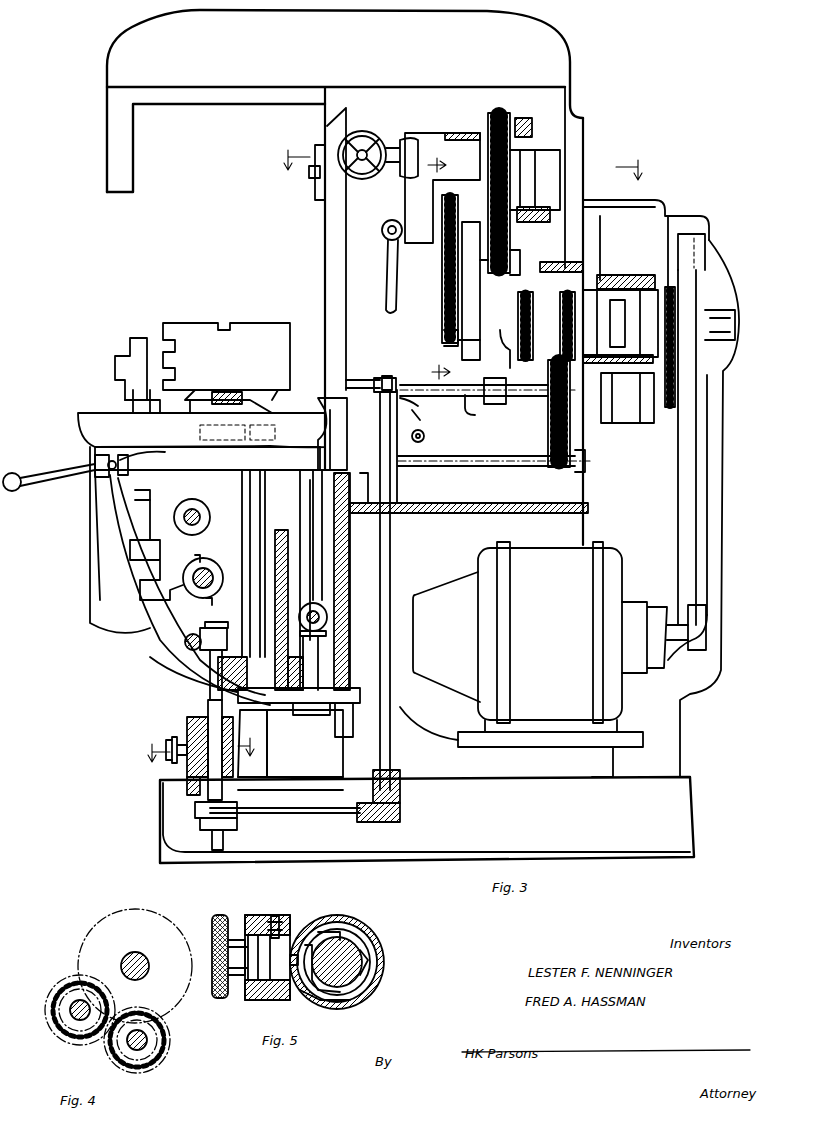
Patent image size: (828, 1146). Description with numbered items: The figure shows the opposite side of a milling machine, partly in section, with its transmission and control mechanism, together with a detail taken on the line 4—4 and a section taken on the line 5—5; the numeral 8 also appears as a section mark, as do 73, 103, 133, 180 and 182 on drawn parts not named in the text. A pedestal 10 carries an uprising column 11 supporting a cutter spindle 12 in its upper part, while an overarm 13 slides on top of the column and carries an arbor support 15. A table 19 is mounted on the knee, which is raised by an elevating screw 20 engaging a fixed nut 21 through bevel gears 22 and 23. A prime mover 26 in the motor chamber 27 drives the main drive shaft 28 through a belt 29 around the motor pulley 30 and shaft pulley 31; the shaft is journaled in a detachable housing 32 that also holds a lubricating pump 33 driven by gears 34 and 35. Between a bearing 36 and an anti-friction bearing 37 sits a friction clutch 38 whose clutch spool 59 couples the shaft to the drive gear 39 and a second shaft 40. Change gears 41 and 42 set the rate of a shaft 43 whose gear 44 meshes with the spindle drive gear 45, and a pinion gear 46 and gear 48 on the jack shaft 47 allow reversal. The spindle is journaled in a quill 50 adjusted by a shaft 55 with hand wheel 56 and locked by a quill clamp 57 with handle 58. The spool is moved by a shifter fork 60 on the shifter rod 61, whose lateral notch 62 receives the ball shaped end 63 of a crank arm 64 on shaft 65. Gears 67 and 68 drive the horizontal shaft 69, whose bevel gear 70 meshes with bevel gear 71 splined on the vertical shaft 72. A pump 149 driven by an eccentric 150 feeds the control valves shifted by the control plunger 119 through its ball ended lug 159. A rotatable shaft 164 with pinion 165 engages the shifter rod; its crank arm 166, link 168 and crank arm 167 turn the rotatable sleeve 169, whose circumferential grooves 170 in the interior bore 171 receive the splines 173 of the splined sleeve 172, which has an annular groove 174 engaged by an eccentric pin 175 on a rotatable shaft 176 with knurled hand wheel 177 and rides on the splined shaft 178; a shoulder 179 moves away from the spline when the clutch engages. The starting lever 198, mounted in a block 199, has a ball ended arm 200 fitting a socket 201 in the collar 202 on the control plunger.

In FIG. 3, the section line 4— 4 is at (444, 268).
In FIG. 3, the section line 5— 5 is at (201, 757).
In FIG. 3, the section line 8- 8 is at (463, 175).
In FIG. 3, the pedestal 10 is at (165, 843).
In FIG. 3, the column 11 is at (575, 118).
In FIG. 3, the cutter spindle 12 is at (316, 196).
In FIG. 3, the overarm 13 is at (107, 62).
In FIG. 3, the arbor support 15 is at (107, 135).
In FIG. 3, the table 19 is at (172, 323).
In FIG. 3, the elevating screw 20 is at (268, 718).
In FIG. 3, the fixed nut 21 is at (268, 732).
In FIG. 3, the bevel gear 22 is at (252, 438).
In FIG. 3, the bevel gear 23 is at (217, 445).
In FIG. 3, the prime mover 26 is at (530, 556).
In FIG. 3, the motor chamber 27 is at (440, 514).
In FIG. 3, the main drive shaft 28 is at (620, 290).
In FIG. 3, the belt 29 is at (678, 483).
In FIG. 3, the motor pulley 30 is at (708, 621).
In FIG. 3, the shaft pulley 31 is at (706, 240).
In FIG. 3, the detachable housing 32 is at (616, 288).
In FIG. 3, the lubricating pump 33 is at (575, 422).
In FIG. 3, the gear 34 is at (668, 290).
In FIG. 3, the gear 35 is at (664, 436).
In FIG. 3, the bearing 36 is at (470, 393).
In FIG. 3, the anti-friction bearing 37 is at (596, 290).
In FIG. 3, the friction clutch 38 is at (572, 258).
In FIG. 3, the drive gear 39 is at (525, 292).
In FIG. 4, the drive gear 39 is at (160, 1061).
In FIG. 3, the second shaft 40 is at (444, 338).
In FIG. 3, the change gear 41 is at (452, 351).
In FIG. 4, the change gear 41 is at (150, 1040).
In FIG. 3, the change gear 42 is at (442, 271).
In FIG. 4, the change gear 42 is at (98, 927).
In FIG. 3, the shaft 43 is at (482, 246).
In FIG. 3, the gear 44 is at (500, 278).
In FIG. 3, the spindle drive gear 45 is at (505, 118).
In FIG. 4, the pinion gear 46 is at (50, 991).
In FIG. 4, the jack shaft 47 is at (68, 1011).
In FIG. 4, the gear 48 is at (66, 1024).
In FIG. 3, the quill 50 is at (470, 126).
In FIG. 3, the shaft 55 is at (394, 136).
In FIG. 3, the hand wheel 56 is at (368, 120).
In FIG. 3, the quill clamp 57 is at (381, 233).
In FIG. 3, the handle 58 is at (387, 299).
In FIG. 3, the clutch spool 59 is at (500, 340).
In FIG. 3, the shifter fork 60 is at (496, 404).
In FIG. 3, the shifter rod 61 is at (468, 405).
In FIG. 3, the lateral notch 62 is at (418, 406).
In FIG. 3, the ball shaped end 63 is at (392, 383).
In FIG. 3, the crank arm 64 is at (421, 421).
In FIG. 3, the shaft 65 is at (424, 437).
In FIG. 3, the gear 67 is at (562, 322).
In FIG. 3, the gear 68 is at (560, 487).
In FIG. 3, the horizontal shaft 69 is at (490, 466).
In FIG. 3, the bevel gear 70 is at (328, 398).
In FIG. 3, the bevel gear 71 is at (347, 523).
In FIG. 3, the vertical shaft 72 is at (311, 563).
In FIG. 3, the nut 73 is at (328, 620).
In FIG. 3, the gear 103 is at (215, 562).
In FIG. 3, the control plunger 119 is at (158, 500).
In FIG. 3, the gear 133 is at (178, 595).
In FIG. 3, the pump 149 is at (335, 668).
In FIG. 3, the eccentric 150 is at (324, 601).
In FIG. 3, the ball ended lug 159 is at (135, 497).
In FIG. 3, the rotatable shaft 164 is at (387, 577).
In FIG. 3, the pinion 165 is at (393, 376).
In FIG. 3, the crank arm 166 is at (372, 821).
In FIG. 3, the crank arm 167 is at (238, 821).
In FIG. 3, the link 168 is at (290, 808).
In FIG. 3, the rotatable sleeve 169 is at (240, 803).
In FIG. 5, the rotatable sleeve 169 is at (370, 1000).
In FIG. 5, the circumferential grooves 170 is at (368, 946).
In FIG. 5, the interior bore 171 is at (372, 986).
In FIG. 5, the splined sleeve 172 is at (365, 971).
In FIG. 5, the splines 173 is at (366, 960).
In FIG. 3, the annular groove 174 is at (268, 748).
In FIG. 3, the eccentric pin 175 is at (208, 705).
In FIG. 5, the eccentric pin 175 is at (281, 905).
In FIG. 3, the rotatable shaft 176 is at (172, 740).
In FIG. 5, the rotatable shaft 176 is at (243, 990).
In FIG. 3, the knurled hand wheel 177 is at (172, 762).
In FIG. 3, the splined shaft 178 is at (190, 690).
In FIG. 5, the splined shaft 178 is at (372, 925).
In FIG. 5, the shoulder 179 is at (285, 1000).
In FIG. 3, the stem 180 is at (208, 660).
In FIG. 3, the pin 182 is at (185, 644).
In FIG. 3, the starting lever 198 is at (66, 468).
In FIG. 3, the block 199 is at (105, 478).
In FIG. 3, the ball ended arm 200 is at (110, 479).
In FIG. 3, the socket 201 is at (118, 481).
In FIG. 3, the collar 202 is at (195, 444).